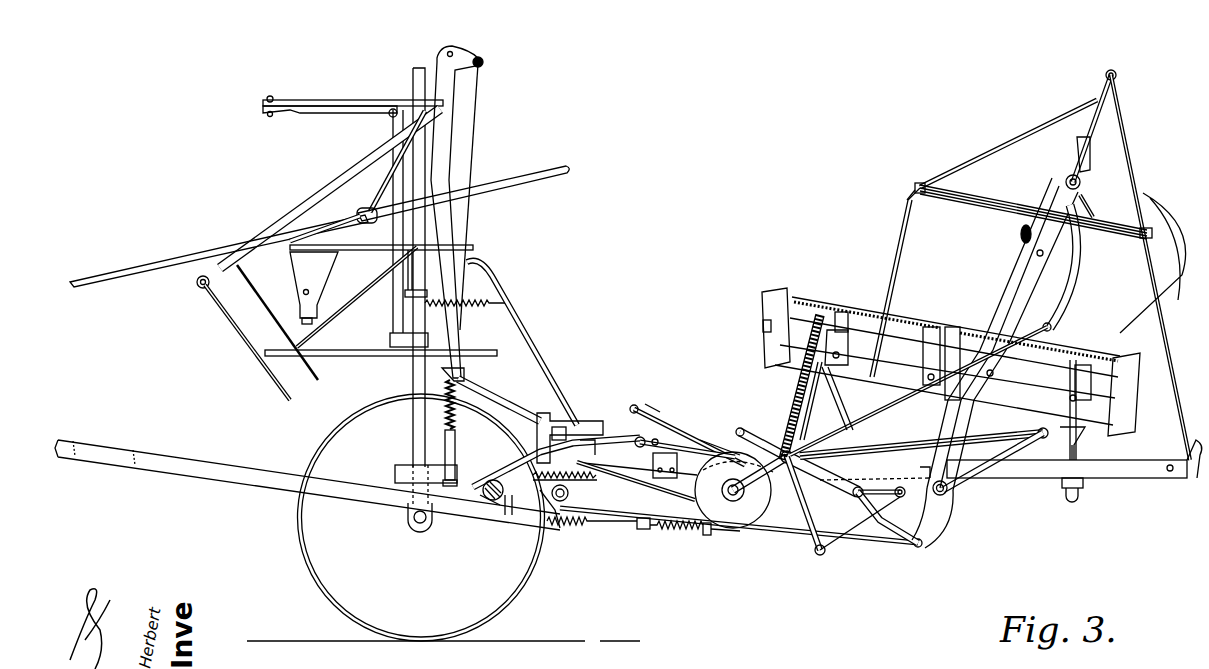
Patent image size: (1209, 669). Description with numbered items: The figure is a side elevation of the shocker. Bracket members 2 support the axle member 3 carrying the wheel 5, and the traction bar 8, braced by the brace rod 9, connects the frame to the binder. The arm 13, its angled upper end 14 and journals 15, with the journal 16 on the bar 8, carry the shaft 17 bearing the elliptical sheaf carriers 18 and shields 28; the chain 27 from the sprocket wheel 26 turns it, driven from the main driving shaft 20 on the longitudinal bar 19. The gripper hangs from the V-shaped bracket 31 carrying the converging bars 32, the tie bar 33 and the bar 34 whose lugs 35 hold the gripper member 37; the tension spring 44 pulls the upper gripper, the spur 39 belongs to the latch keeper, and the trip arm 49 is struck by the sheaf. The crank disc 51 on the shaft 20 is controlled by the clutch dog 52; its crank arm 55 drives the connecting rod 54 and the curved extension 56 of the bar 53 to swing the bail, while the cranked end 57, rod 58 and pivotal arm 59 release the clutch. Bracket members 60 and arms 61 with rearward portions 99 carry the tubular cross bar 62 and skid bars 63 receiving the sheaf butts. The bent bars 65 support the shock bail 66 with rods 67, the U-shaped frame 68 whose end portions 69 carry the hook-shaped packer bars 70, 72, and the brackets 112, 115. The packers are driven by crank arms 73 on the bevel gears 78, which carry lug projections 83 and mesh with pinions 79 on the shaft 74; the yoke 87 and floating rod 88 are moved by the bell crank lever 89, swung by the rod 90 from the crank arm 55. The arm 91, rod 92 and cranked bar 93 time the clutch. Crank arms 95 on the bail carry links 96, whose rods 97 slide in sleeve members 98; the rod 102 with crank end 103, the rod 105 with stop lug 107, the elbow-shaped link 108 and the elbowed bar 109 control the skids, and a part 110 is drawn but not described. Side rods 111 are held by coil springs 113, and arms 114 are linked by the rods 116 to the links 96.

The bracket members 2 is at (417, 487).
The axle member 3 is at (413, 380).
The wheel 5 is at (330, 432).
The bar 8 is at (1080, 453).
The brace rod 9 is at (1063, 444).
The arm 13 is at (815, 407).
The angled upper end 14 is at (840, 380).
The journals 15 is at (848, 340).
The journal 16 is at (1068, 395).
The shaft 17 is at (920, 352).
The elliptical sheaf carriers 18 is at (780, 292).
The longitudinal bar 19 is at (1135, 478).
The main driving shaft 20 is at (733, 530).
The sprocket wheel 26 is at (770, 500).
The chain 27 is at (795, 386).
The shields 28 is at (905, 299).
The V-shaped bracket 31 is at (1085, 190).
The bars 32 is at (1120, 124).
The tie bar 33 is at (1173, 378).
The bar 34 is at (1020, 146).
The lugs 35 is at (920, 183).
The gripper member 37 is at (894, 272).
The spur 39 is at (1077, 144).
The coiled tension spring 44 is at (1020, 238).
The trip arm 49 is at (1175, 268).
The crank disc 51 is at (728, 450).
The clutch dog 52 is at (745, 438).
The bar 53 is at (1052, 245).
The connecting rod 54 is at (905, 405).
The crank arm 55 is at (785, 450).
The curved extension 56 is at (1058, 305).
The cranked end 57 is at (1095, 215).
The rod 58 is at (930, 434).
The pivotal arm 59 is at (898, 497).
The bracket members 60 is at (600, 530).
The arm 61 is at (515, 502).
The tubular cross bar 62 is at (490, 505).
The skid bars 63 is at (268, 478).
The bent bars 65 is at (535, 347).
The bail shaped tubular bar 66 is at (200, 290).
The rods 67 is at (243, 340).
The U-shaped frame 68 is at (395, 168).
The end portions 69 is at (310, 113).
The hook-shaped bars 70 is at (376, 100).
The hook-shaped bars 72 is at (475, 247).
The crank arms 73 is at (503, 395).
The shaft 74 is at (548, 505).
The bevel gears 78 is at (520, 466).
The bevel pinions 79 is at (950, 492).
The lug projection 83 is at (544, 413).
The yoke 87 is at (640, 532).
The central floating rod 88 is at (857, 541).
The bell crank lever 89 is at (995, 463).
The rod 90 is at (880, 448).
The arm 91 is at (800, 510).
The rod 92 is at (668, 534).
The cranked bar 93 is at (598, 455).
The crank arm 95 is at (437, 68).
The link 96 is at (480, 57).
The rods 97 is at (470, 136).
The sleeve members 98 is at (457, 444).
The rearwardly extending portions 99 is at (475, 500).
The rod 102 is at (660, 440).
The crank end 103 is at (710, 445).
The rod 105 is at (650, 409).
The stop lug 107 is at (637, 402).
The elbow-shaped link 108 is at (690, 440).
The elbowed bar 109 is at (585, 440).
The spring 110 is at (458, 424).
The side rods 111 is at (160, 268).
The brackets 112 is at (411, 280).
The coil springs 113 is at (480, 310).
The arms 114 is at (535, 181).
The brackets 115 is at (320, 268).
The rods 116 is at (388, 200).